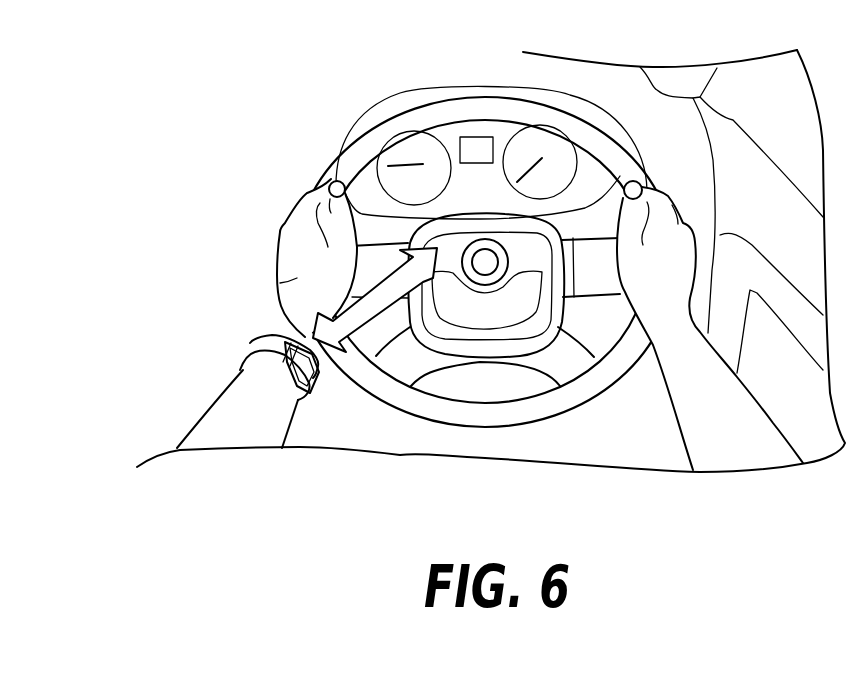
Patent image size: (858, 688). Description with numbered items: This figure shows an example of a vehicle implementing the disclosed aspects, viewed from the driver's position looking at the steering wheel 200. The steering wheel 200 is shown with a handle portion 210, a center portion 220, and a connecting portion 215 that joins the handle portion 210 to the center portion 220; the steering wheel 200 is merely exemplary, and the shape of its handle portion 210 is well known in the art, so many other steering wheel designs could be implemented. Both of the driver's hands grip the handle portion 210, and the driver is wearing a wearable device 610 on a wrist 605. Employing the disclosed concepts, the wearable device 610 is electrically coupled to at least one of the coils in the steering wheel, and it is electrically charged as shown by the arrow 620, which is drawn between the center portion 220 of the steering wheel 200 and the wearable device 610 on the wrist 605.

The steering wheel 200 is at (490, 418).
The handle portion 210 is at (488, 97).
The connecting portion 215 is at (550, 372).
The center portion 220 is at (557, 242).
The wrist 605 is at (278, 283).
The wearable device 610 is at (252, 343).
The arrow 620 is at (376, 378).